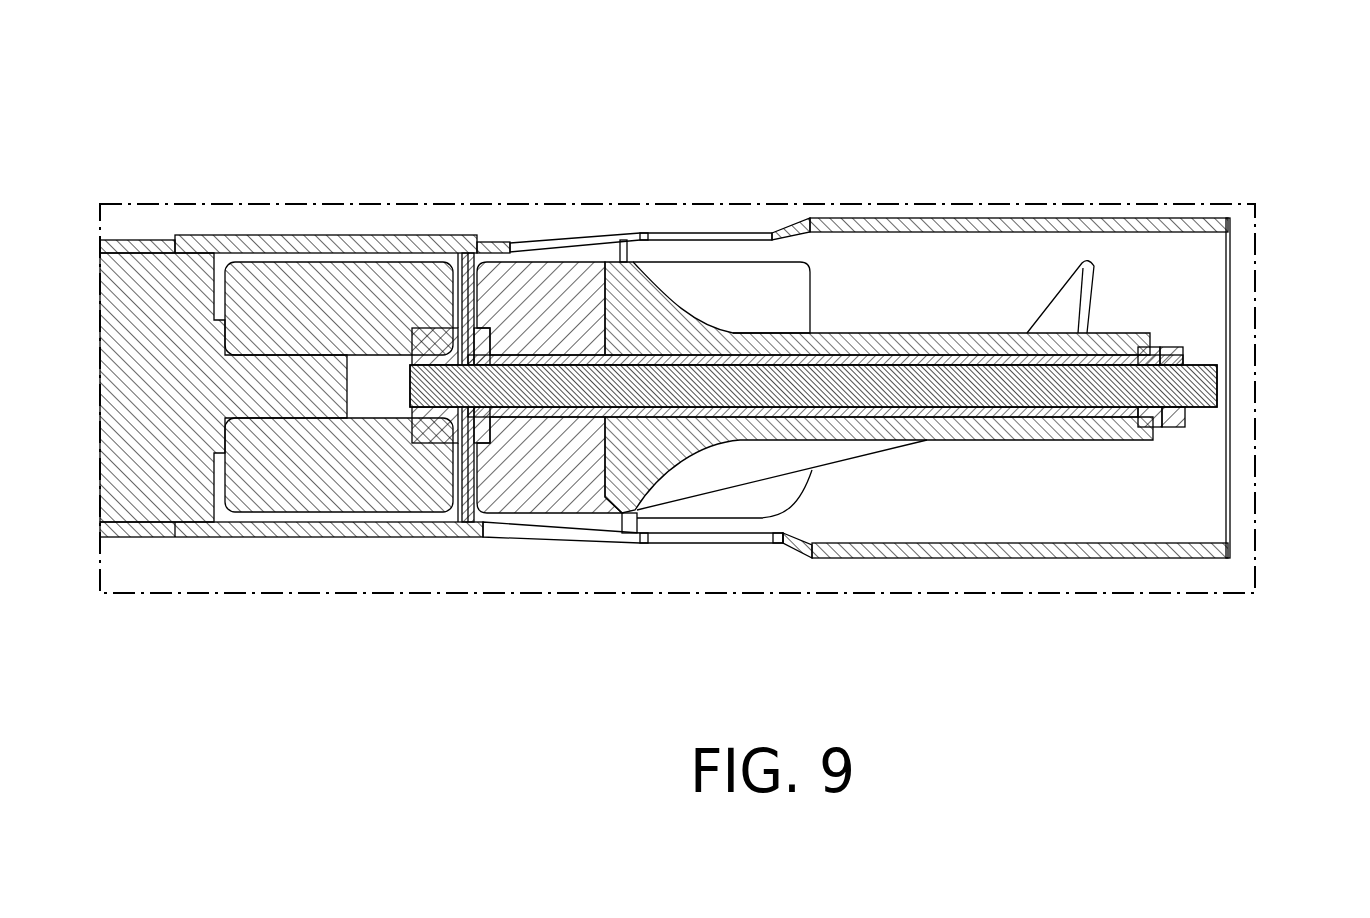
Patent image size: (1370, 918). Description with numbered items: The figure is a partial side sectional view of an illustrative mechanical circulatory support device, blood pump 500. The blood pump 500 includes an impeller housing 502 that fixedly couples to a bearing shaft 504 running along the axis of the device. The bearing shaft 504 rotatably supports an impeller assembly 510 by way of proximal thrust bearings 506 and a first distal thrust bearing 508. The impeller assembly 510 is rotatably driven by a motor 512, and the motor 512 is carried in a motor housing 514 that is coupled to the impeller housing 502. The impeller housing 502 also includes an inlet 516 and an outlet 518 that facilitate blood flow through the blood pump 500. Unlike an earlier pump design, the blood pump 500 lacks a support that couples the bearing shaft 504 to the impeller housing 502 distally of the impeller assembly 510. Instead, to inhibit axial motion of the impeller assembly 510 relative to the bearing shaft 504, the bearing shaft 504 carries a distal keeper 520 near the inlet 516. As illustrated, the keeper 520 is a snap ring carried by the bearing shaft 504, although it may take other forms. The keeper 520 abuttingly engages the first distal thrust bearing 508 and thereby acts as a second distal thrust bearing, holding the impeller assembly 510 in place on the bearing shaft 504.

The blood pump 500 is at (297, 138).
The impeller housing 502 is at (843, 218).
The bearing shaft 504 is at (945, 355).
The proximal thrust bearings 506 is at (469, 330).
The first distal thrust bearing 508 is at (1163, 347).
The impeller assembly 510 is at (892, 333).
The motor 512 is at (122, 240).
The motor housing 514 is at (137, 537).
The inlet 516 is at (1228, 318).
The outlet 518 is at (745, 232).
The distal keeper 520 is at (1183, 357).